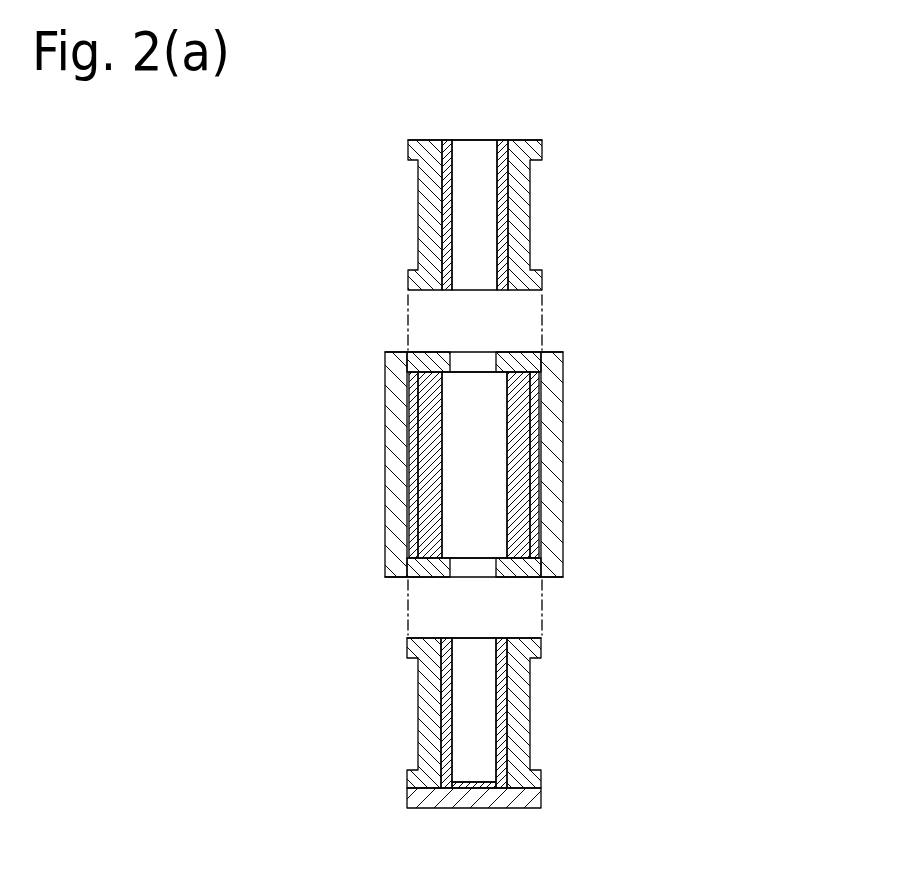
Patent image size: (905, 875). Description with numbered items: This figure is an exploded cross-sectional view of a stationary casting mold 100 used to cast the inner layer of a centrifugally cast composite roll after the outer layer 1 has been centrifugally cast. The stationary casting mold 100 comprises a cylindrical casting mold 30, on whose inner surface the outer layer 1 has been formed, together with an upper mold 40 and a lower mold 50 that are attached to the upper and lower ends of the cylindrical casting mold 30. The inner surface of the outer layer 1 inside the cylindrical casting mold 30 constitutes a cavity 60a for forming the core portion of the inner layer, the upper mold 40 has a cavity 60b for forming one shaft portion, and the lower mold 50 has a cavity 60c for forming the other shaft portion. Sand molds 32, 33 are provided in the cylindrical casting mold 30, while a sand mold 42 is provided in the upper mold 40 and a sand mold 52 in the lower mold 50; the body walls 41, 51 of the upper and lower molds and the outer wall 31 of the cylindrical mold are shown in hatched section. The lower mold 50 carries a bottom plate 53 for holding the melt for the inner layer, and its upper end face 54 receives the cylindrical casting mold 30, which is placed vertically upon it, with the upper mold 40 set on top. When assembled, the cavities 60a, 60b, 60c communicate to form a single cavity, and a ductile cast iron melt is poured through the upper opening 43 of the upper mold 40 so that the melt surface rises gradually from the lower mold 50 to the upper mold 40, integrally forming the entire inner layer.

The stationary casting mold 100 is at (690, 372).
The upper mold 40 is at (596, 211).
The upper pipe body 41 is at (525, 192).
The sand mold 42 is at (504, 242).
The upper opening 43 is at (471, 140).
The cavity 60b is at (468, 221).
The cylindrical casting mold 30 is at (603, 433).
The outer housing 31 is at (555, 470).
The sand mold 32 is at (522, 400).
The sand mold 33 is at (519, 364).
The outer layer 1 is at (535, 502).
The cavity 60a is at (464, 456).
The lower mold 50 is at (596, 715).
The lower pipe body 51 is at (524, 687).
The sand mold 52 is at (504, 736).
The bottom plate 53 is at (533, 795).
The lower pipe end face 54 is at (465, 637).
The cavity 60c is at (468, 712).